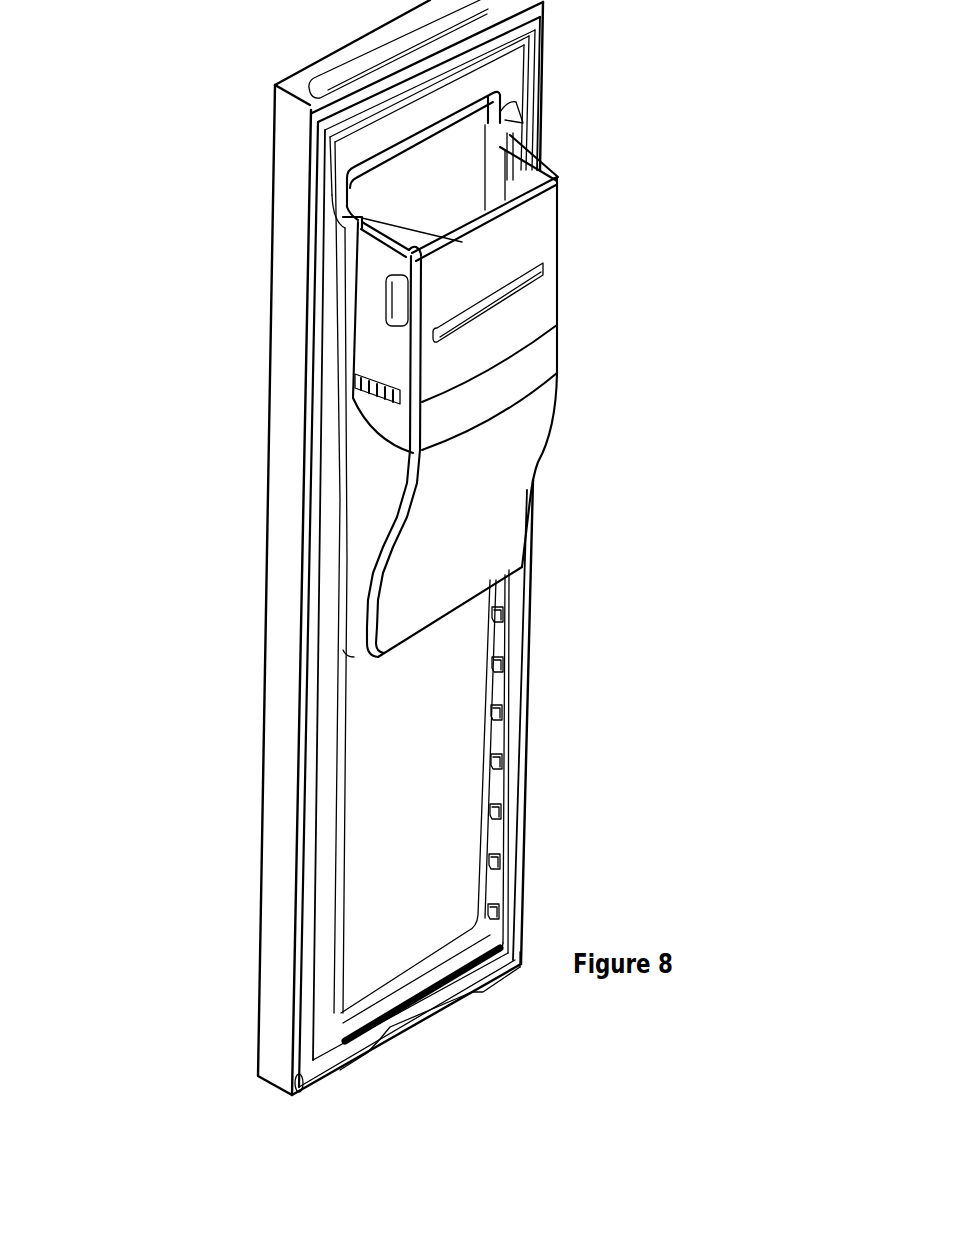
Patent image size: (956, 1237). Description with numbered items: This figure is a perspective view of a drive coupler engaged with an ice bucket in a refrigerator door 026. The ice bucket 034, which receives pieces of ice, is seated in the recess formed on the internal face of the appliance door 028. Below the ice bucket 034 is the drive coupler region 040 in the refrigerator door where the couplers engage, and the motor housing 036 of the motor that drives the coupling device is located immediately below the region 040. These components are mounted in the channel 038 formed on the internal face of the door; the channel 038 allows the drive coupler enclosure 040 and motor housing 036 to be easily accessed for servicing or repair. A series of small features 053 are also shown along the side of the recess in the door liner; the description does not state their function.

The refrigerator door 026 is at (258, 168).
The appliance door 028 is at (385, 687).
The ice bucket 034 is at (500, 237).
The motor housing 036 is at (473, 398).
The channel 038 is at (413, 840).
The drive coupler region 040 is at (448, 337).
The shelf support hooks 053 is at (348, 872).